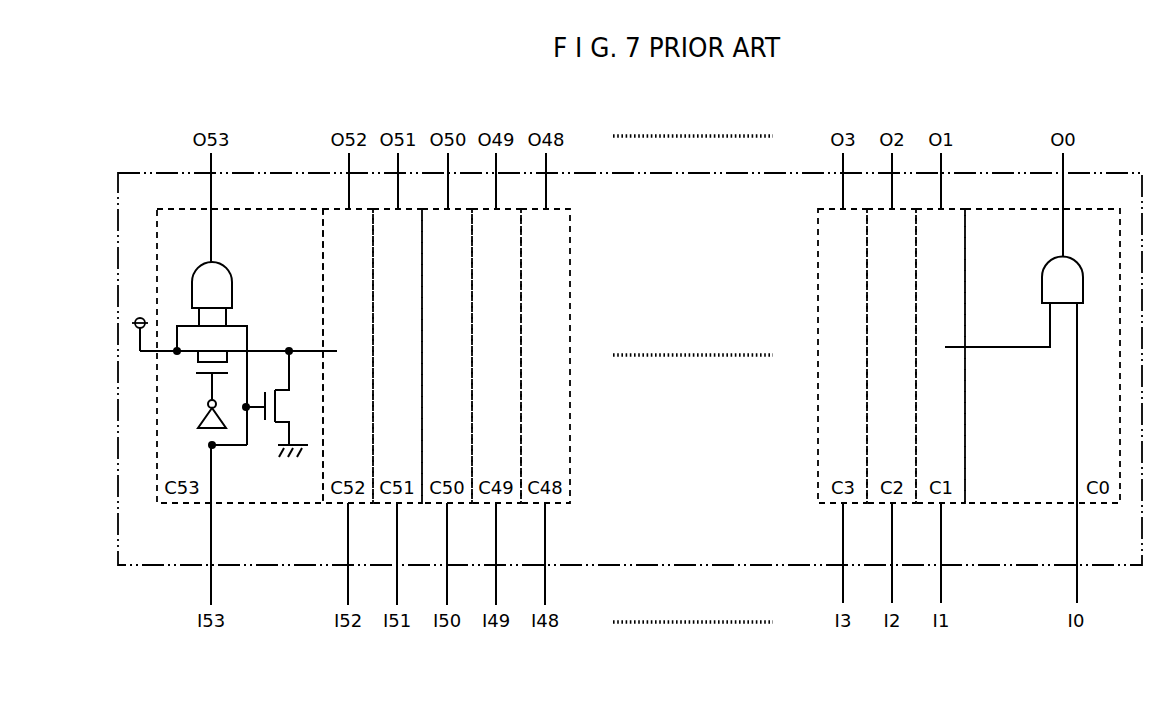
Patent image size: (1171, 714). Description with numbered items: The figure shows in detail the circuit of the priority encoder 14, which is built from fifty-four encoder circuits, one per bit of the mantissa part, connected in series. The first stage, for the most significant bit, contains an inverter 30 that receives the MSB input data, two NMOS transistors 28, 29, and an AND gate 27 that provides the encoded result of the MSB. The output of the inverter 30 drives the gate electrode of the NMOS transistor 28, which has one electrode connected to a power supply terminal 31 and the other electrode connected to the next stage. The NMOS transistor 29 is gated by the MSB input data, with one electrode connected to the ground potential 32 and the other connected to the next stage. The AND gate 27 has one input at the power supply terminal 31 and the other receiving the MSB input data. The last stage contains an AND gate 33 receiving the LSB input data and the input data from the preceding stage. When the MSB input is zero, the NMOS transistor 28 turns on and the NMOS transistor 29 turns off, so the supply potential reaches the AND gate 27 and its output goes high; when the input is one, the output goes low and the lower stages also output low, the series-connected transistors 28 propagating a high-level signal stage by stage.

The priority encoder 14 is at (1122, 172).
The AND gate 27 is at (223, 277).
The NMOS transistor 28 is at (197, 371).
The NMOS transistor 29 is at (285, 408).
The inverter 30 is at (201, 421).
The power supply terminal 31 is at (139, 316).
The ground 32 is at (292, 458).
The AND gate 33 is at (1051, 279).